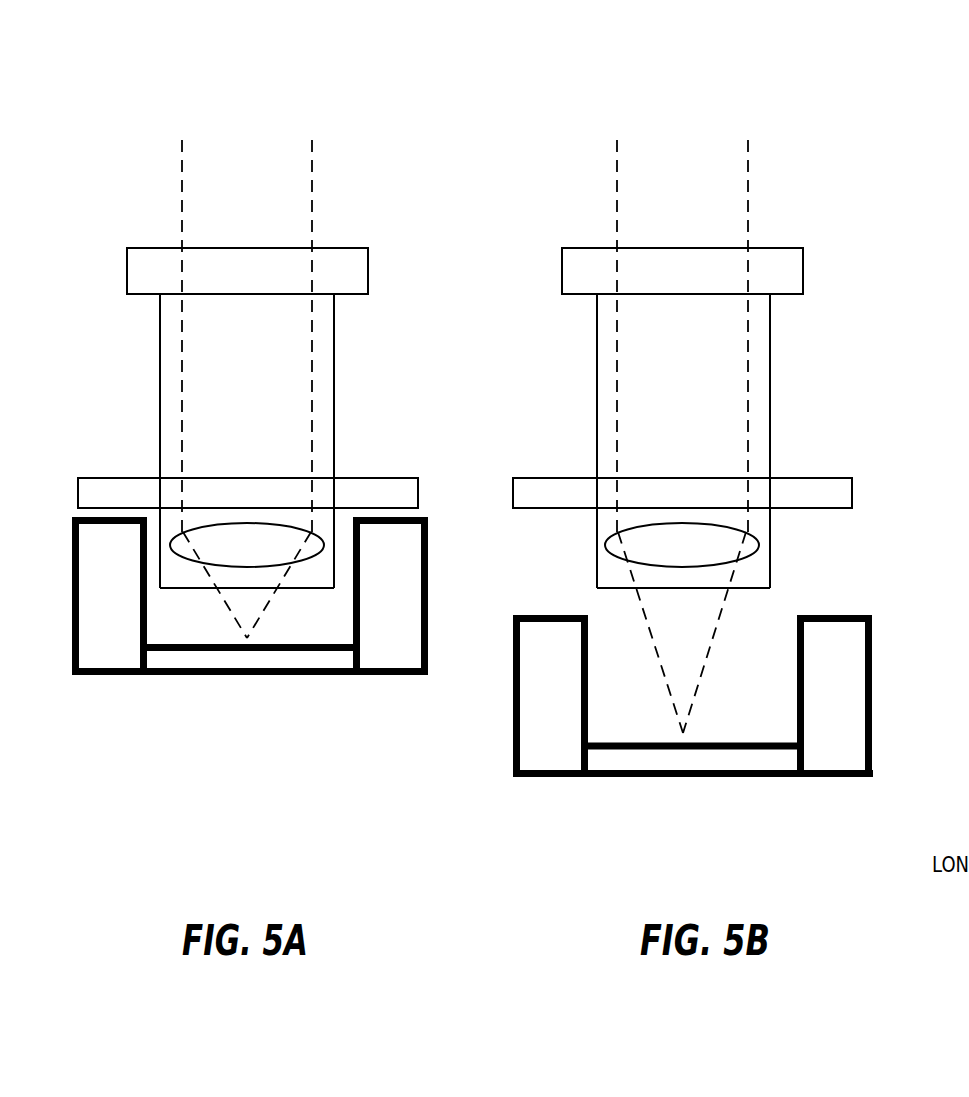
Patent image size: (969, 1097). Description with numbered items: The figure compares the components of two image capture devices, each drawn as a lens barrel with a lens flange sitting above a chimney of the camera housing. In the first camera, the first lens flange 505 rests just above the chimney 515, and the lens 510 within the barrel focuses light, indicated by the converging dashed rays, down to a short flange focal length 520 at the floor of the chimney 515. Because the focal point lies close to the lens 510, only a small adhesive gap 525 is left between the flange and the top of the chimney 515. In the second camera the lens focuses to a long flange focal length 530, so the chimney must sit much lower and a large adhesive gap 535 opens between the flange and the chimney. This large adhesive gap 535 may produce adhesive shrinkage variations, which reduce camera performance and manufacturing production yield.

In FIG. 5A, the first lens flange 505 is at (132, 497).
In FIG. 5A, the lens 510 is at (245, 535).
In FIG. 5A, the chimney 515 is at (105, 658).
In FIG. 5A, the short flange focal length 520 is at (268, 632).
In FIG. 5A, the small adhesive gap 525 is at (473, 457).
In FIG. 5B, the long flange focal length 530 is at (675, 713).
In FIG. 5B, the large adhesive gap 535 is at (895, 495).